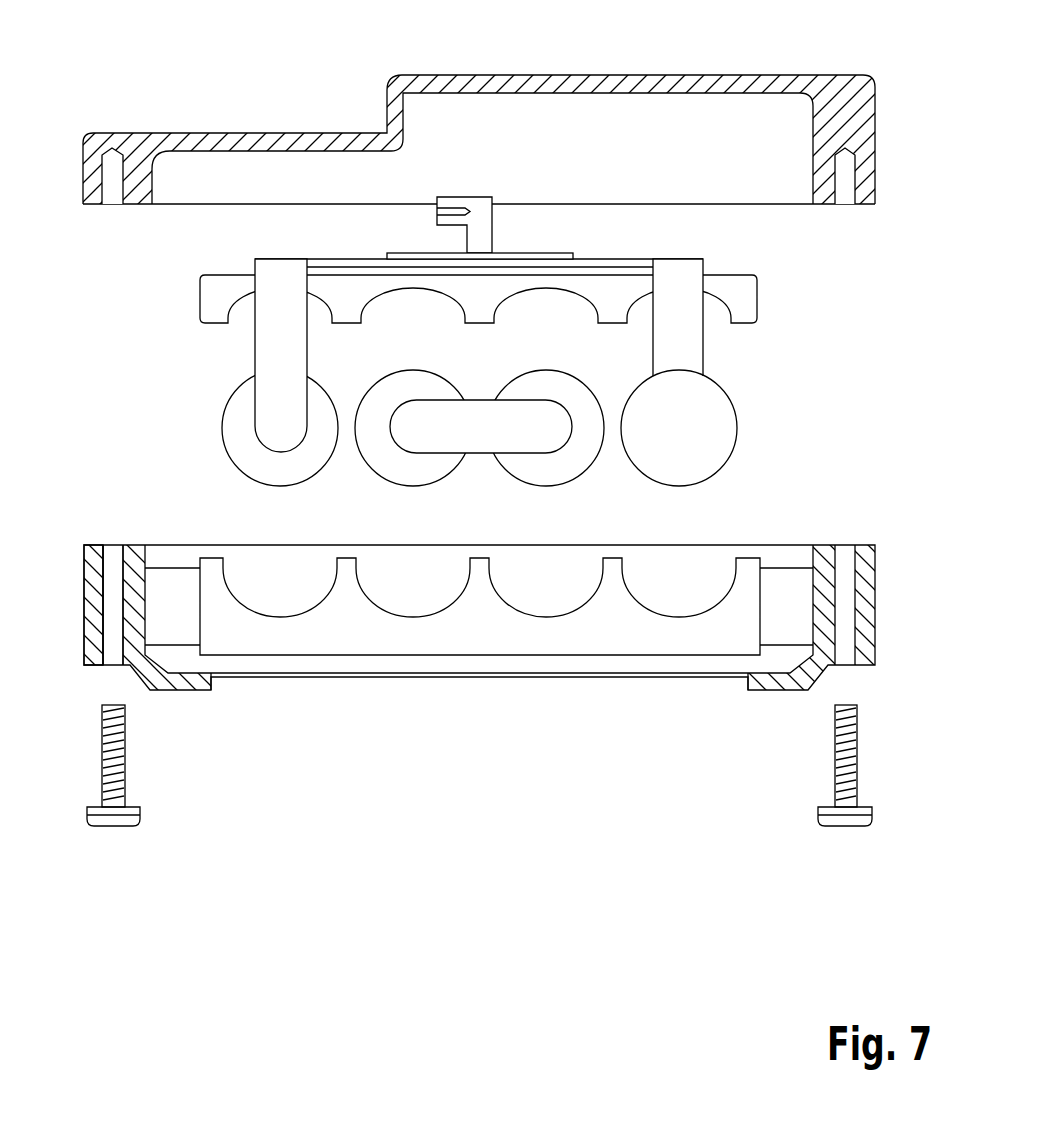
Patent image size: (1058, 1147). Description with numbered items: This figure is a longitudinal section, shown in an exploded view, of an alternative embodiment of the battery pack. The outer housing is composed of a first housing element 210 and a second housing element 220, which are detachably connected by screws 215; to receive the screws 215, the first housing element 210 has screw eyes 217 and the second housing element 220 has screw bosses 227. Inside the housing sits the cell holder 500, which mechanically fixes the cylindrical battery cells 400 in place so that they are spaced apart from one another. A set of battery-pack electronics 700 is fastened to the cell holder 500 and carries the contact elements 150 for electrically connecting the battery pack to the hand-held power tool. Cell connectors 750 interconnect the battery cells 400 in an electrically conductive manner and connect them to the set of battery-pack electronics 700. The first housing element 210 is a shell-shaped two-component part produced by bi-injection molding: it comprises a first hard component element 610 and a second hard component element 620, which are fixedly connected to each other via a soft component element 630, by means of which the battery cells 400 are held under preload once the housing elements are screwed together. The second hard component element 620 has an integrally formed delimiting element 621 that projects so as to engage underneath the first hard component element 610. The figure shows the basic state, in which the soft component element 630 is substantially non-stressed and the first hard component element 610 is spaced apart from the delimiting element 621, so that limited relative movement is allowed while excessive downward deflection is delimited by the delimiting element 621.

The second housing element 220 is at (838, 105).
The screw boss 227 is at (113, 197).
The contact element 150 is at (440, 224).
The set of battery-pack electronics 700 is at (712, 233).
The cell holder 500 is at (735, 297).
The cell connector 750 is at (265, 345).
The battery cell 400 is at (705, 418).
The second hard component element 620 is at (100, 545).
The screw eye 217 is at (113, 558).
The first housing element 210 is at (863, 590).
The first hard component element 610 is at (612, 633).
The soft component element 630 is at (785, 622).
The delimiting element 621 is at (190, 680).
The screw 215 is at (113, 815).